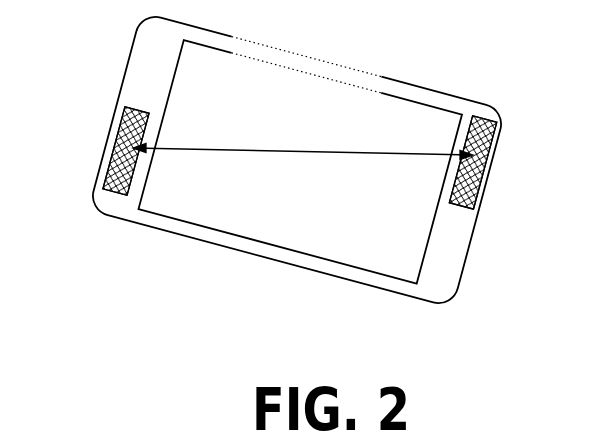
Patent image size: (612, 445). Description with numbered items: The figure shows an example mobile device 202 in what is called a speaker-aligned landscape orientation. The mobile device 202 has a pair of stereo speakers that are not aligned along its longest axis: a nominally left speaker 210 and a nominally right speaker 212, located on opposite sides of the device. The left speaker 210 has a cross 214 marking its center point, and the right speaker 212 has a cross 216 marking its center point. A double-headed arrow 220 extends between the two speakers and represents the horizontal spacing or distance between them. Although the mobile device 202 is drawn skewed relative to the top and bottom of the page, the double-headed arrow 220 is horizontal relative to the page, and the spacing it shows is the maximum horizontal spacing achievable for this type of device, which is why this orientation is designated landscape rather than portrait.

The mobile device 202 is at (327, 92).
The left speaker 210 is at (133, 106).
The right speaker 212 is at (482, 118).
The cross 214 is at (113, 193).
The cross 216 is at (477, 160).
The double-headed arrow 220 is at (247, 151).